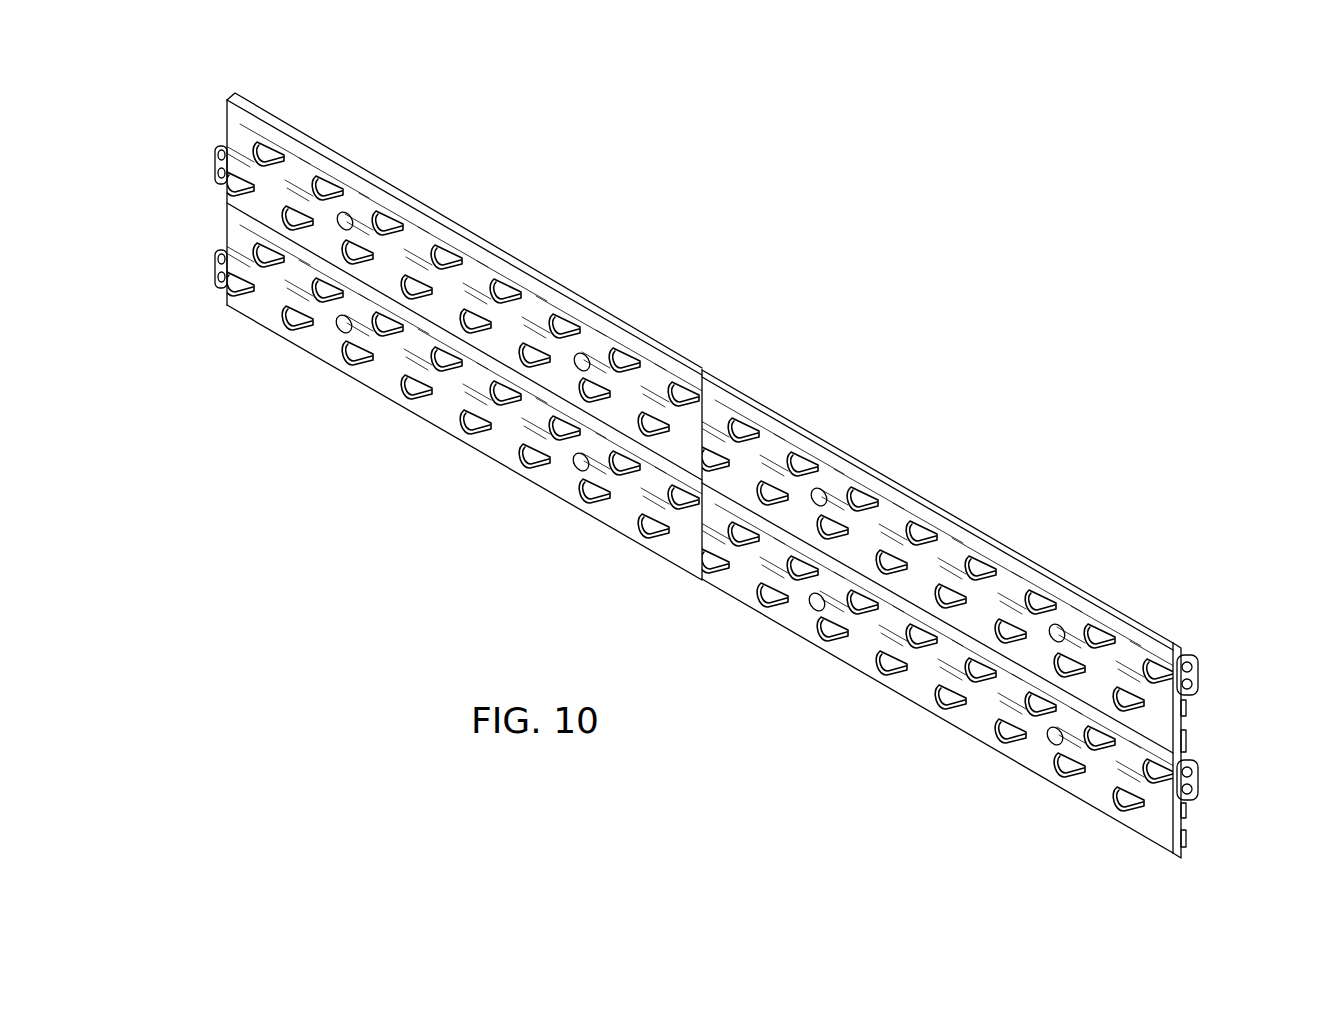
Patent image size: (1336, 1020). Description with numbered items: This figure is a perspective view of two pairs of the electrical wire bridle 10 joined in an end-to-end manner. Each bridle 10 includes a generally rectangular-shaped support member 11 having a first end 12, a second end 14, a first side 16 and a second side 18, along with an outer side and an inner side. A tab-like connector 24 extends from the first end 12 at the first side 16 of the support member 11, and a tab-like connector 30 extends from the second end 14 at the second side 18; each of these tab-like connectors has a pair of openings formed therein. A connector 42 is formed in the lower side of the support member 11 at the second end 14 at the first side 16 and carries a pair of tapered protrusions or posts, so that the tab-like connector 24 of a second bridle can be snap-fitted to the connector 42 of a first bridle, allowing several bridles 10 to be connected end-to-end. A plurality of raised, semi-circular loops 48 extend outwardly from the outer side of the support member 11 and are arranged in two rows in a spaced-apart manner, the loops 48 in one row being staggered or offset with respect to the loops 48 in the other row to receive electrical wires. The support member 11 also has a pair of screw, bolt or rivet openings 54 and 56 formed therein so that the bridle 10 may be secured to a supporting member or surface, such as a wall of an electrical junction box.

The electrical wire bridle 10 is at (520, 238).
The support member 11 is at (625, 333).
The first end 12 is at (227, 120).
The second end 14 is at (702, 393).
The first side 16 is at (500, 466).
The second side 18 is at (660, 337).
The tab-like connector 24 is at (212, 160).
The tab-like connector 30 is at (1204, 672).
The connector 42 is at (1193, 718).
The raised semi-circular loops 48 is at (397, 230).
The screw, bolt or rivet opening 54 is at (348, 212).
The screw, bolt or rivet opening 56 is at (584, 353).